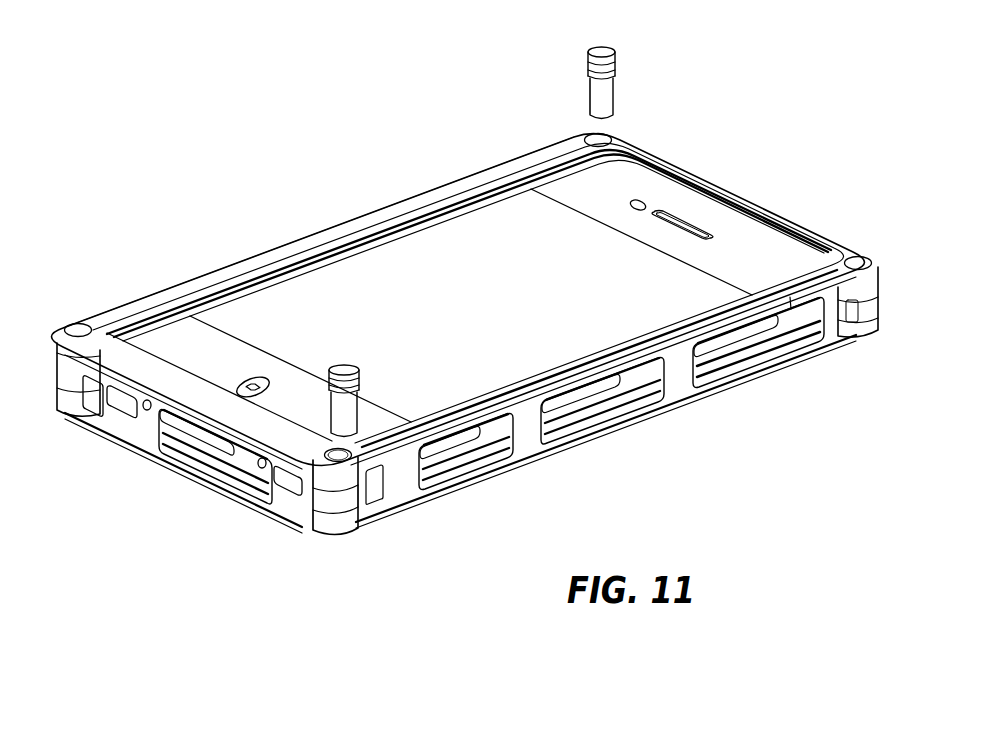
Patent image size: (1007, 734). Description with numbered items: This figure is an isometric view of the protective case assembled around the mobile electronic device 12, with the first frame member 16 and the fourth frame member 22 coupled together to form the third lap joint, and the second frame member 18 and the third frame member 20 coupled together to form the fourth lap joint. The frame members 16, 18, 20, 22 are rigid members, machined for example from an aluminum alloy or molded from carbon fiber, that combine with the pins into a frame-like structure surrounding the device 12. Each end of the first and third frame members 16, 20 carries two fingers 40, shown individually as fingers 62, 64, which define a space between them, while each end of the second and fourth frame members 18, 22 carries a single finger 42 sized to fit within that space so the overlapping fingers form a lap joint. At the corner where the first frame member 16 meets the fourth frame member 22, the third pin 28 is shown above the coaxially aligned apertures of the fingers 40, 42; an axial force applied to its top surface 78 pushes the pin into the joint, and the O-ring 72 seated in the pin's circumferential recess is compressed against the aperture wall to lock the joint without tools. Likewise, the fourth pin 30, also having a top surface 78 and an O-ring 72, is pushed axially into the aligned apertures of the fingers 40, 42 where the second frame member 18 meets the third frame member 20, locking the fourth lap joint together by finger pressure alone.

The mobile electronic device 12 is at (455, 242).
The first frame member 16 is at (333, 227).
The second frame member 18 is at (190, 475).
The third frame member 20 is at (599, 440).
The fourth frame member 22 is at (800, 216).
The third pin 28 is at (603, 108).
The fourth pin 30 is at (357, 420).
The fingers 40 is at (335, 496).
The finger 42 is at (340, 503).
The first corner portion 62 is at (333, 478).
The second corner portion 64 is at (328, 527).
The O-ring 72 is at (618, 72).
The top surface 78 is at (600, 50).